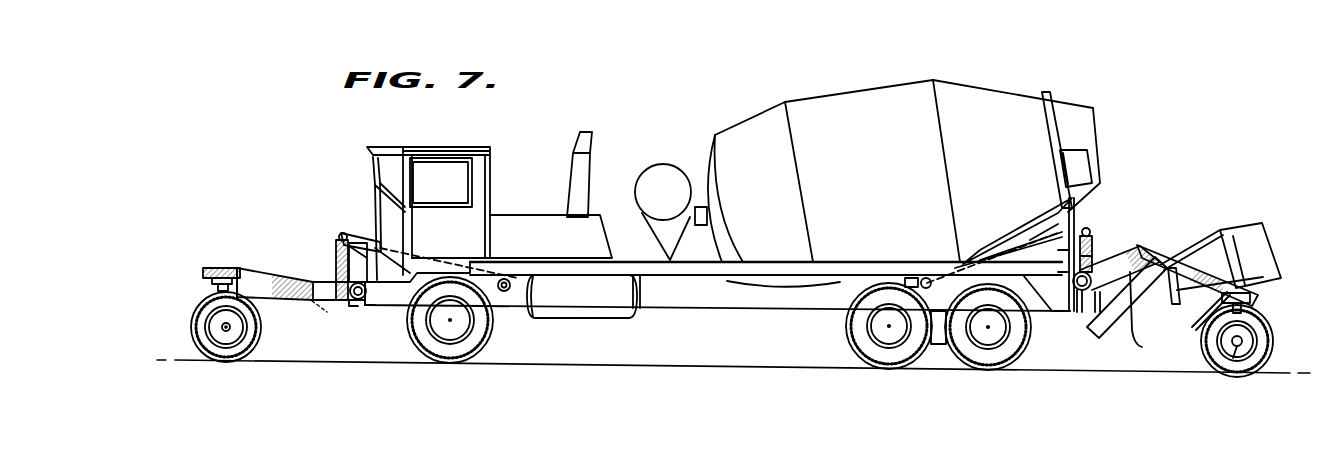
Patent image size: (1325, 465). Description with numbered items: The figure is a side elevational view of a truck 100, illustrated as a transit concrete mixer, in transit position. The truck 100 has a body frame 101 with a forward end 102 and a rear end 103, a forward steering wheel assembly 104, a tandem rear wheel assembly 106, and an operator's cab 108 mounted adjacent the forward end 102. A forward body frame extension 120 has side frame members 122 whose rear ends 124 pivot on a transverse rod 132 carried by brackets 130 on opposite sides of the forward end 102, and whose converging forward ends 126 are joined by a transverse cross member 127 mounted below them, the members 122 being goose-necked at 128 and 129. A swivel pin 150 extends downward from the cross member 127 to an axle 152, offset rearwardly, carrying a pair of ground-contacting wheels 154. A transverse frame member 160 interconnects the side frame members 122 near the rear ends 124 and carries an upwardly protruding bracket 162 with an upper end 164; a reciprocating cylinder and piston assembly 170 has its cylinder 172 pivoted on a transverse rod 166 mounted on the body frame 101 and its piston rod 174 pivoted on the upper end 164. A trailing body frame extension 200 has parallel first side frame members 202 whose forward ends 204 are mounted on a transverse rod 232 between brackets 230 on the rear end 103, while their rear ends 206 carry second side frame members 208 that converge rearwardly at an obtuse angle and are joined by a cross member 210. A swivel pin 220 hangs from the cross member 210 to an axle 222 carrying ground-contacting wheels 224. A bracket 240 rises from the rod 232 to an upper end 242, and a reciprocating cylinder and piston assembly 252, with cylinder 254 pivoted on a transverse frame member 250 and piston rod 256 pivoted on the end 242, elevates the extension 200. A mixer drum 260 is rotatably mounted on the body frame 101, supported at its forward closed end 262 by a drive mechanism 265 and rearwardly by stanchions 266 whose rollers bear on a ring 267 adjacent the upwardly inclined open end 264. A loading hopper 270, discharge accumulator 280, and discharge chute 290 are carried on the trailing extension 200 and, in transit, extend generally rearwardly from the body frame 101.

The truck 100 is at (647, 114).
The body frame 101 is at (713, 306).
The forward end 102 is at (367, 301).
The rear end 103 is at (1104, 313).
The forward steering wheel assembly 104 is at (494, 326).
The rear wheel assembly 106 is at (940, 350).
The operator's cab 108 is at (456, 120).
The body frame extension 120 is at (310, 305).
The side frame members 122 is at (318, 280).
The rear ends 124 is at (353, 306).
The forward ends 126 is at (203, 270).
The transverse cross member 127 is at (210, 281).
The goose-neck 128 is at (270, 269).
The goose-neck 129 is at (240, 267).
The brackets 130 is at (359, 283).
The transverse rod 132 is at (358, 300).
The swivel pin 150 is at (203, 296).
The axle 152 is at (222, 327).
The ground-contacting wheels 154 is at (255, 341).
The transverse frame member 160 is at (327, 298).
The bracket 162 is at (337, 256).
The upper end 164 is at (342, 238).
The piston rod 174 is at (368, 240).
The transverse member or rod 166 is at (513, 283).
The reciprocating cylinder and piston assembly 170 is at (441, 240).
The cylinder 172 is at (469, 240).
The trailing body frame extension 200 is at (1142, 242).
The first side frame members 202 is at (1128, 240).
The forward ends 204 is at (1077, 257).
The rear ends 206 is at (1148, 243).
The second side frame members 208 is at (1175, 300).
The cross member 210 is at (1200, 313).
The swivel pin 220 is at (1252, 296).
The axle 222 is at (1222, 372).
The ground-contacting wheels 224 is at (1242, 373).
The brackets 230 is at (1058, 313).
The transverse rod 232 is at (1074, 280).
The bracket 240 is at (1093, 242).
The upper end 242 is at (1087, 230).
The transverse frame member 250 is at (918, 277).
The reciprocating cylinder and piston assembly 252 is at (1010, 233).
The cylinder 254 is at (986, 260).
The piston rod 256 is at (1031, 249).
The mixer drum 260 is at (900, 183).
The closed end 262 is at (710, 166).
The open end 264 is at (1100, 131).
The drive mechanism 265 is at (684, 236).
The stanchions 266 is at (1074, 210).
The ring 267 is at (1047, 62).
The loading hopper 270 is at (1258, 222).
The discharge accumulator 280 is at (1203, 230).
The discharge chute 290 is at (1131, 322).